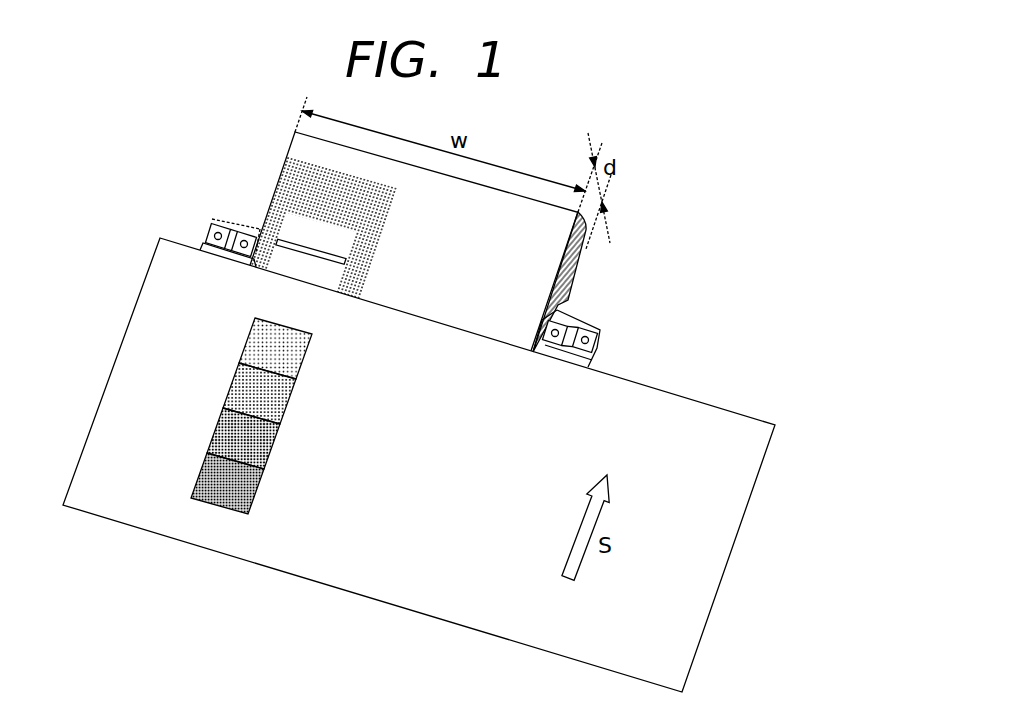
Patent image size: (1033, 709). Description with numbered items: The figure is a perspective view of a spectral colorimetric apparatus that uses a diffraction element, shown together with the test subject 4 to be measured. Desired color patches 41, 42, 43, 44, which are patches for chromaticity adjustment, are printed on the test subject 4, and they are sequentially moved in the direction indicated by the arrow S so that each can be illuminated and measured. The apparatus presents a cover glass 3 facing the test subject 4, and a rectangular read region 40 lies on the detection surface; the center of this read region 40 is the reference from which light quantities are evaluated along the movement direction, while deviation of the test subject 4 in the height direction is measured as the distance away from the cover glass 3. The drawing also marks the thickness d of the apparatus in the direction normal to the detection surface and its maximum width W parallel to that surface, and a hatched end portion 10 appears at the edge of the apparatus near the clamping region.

The cover glass 3 is at (300, 217).
The test subject 4 is at (147, 332).
The tape end portion 10 is at (572, 284).
The rectangular read region 40 is at (263, 237).
The color patch 41 is at (305, 350).
The color patch 42 is at (288, 403).
The color patch 43 is at (273, 447).
The color patch 44 is at (258, 492).